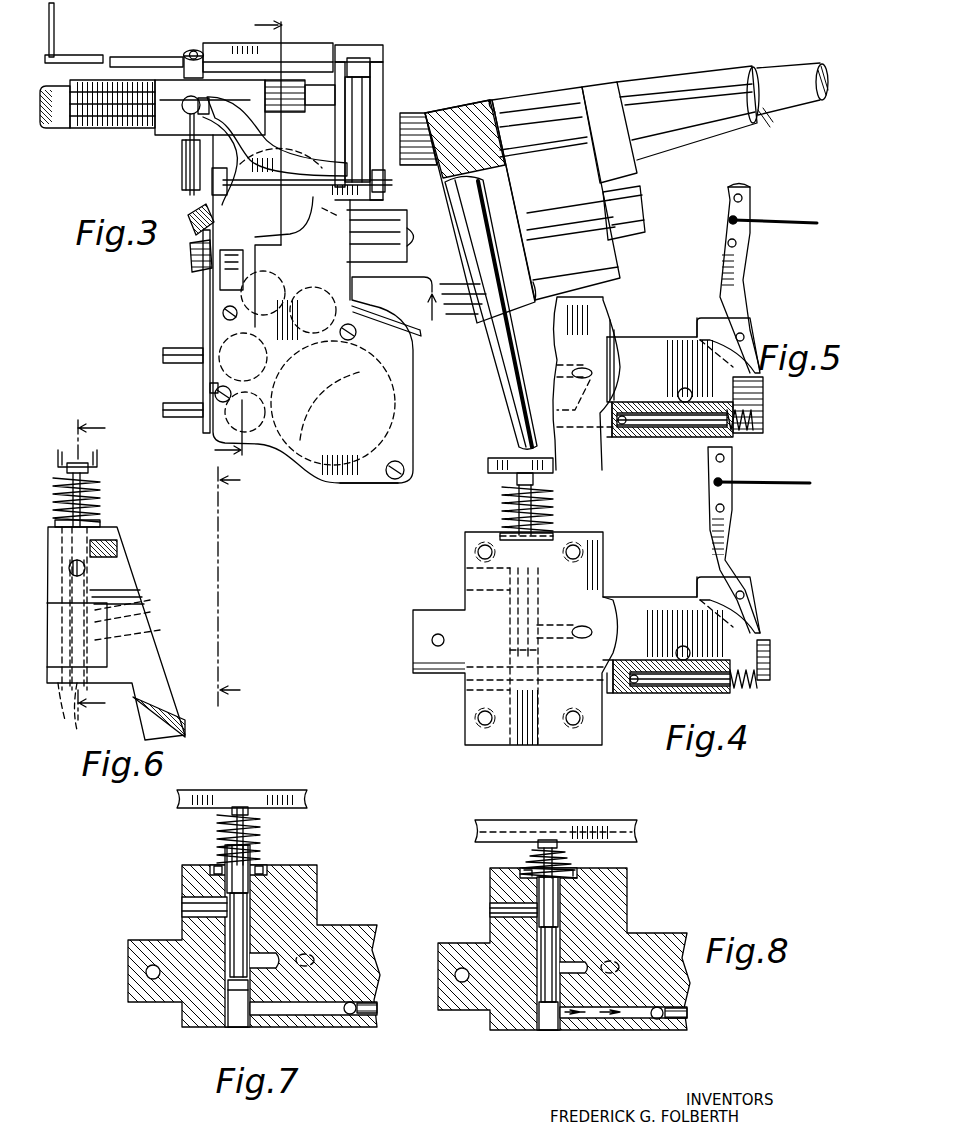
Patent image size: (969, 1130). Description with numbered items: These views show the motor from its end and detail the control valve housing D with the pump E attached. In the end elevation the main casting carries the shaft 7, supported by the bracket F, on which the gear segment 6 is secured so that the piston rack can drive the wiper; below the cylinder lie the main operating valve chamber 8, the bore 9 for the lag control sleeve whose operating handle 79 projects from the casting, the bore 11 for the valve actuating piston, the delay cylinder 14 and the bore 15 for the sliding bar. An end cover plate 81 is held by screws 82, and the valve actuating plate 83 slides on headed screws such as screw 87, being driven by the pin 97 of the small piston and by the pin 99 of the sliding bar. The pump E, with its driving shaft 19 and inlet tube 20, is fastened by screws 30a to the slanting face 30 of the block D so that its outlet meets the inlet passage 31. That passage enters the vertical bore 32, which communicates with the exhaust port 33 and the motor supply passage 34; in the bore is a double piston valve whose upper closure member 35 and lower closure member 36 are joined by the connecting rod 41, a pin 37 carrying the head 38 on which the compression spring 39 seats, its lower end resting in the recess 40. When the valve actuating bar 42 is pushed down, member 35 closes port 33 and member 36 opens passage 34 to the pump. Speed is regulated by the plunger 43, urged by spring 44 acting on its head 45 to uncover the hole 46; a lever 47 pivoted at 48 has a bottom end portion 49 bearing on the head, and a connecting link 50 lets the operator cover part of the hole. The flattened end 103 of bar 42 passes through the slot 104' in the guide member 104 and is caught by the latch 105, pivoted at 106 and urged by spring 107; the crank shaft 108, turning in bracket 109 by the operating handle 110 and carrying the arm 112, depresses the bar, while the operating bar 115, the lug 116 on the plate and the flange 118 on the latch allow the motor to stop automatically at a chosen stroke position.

In FIG. 3, the gear segment 6 is at (292, 88).
In FIG. 3, the shaft 7 is at (60, 115).
In FIG. 6, the shaft 7 is at (99, 569).
In FIG. 3, the main operating valve chamber 8 is at (280, 275).
In FIG. 3, the bore 9 is at (318, 288).
In FIG. 3, the bore 11 is at (292, 365).
In FIG. 3, the delay cylinder 14 is at (300, 480).
In FIG. 3, the bore 15 is at (300, 420).
In FIG. 5, the shaft 19 is at (800, 98).
In FIG. 5, the tube 20 is at (510, 402).
In FIG. 5, the slanting face 30 is at (450, 120).
In FIG. 5, the screws 30a is at (494, 100).
In FIG. 5, the inlet passage 31 is at (587, 368).
In FIG. 4, the inlet passage 31 is at (585, 626).
In FIG. 6, the inlet passage 31 is at (150, 615).
In FIG. 7, the inlet passage 31 is at (270, 958).
In FIG. 8, the inlet passage 31 is at (578, 962).
In FIG. 4, the vertical bore 32 is at (468, 688).
In FIG. 7, the vertical bore 32 is at (248, 1015).
In FIG. 8, the vertical bore 32 is at (540, 970).
In FIG. 4, the exhaust port 33 is at (470, 575).
In FIG. 6, the exhaust port 33 is at (95, 552).
In FIG. 7, the exhaust port 33 is at (183, 902).
In FIG. 8, the exhaust port 33 is at (492, 910).
In FIG. 5, the inlet passage 34 is at (617, 368).
In FIG. 4, the inlet passage 34 is at (562, 682).
In FIG. 6, the inlet passage 34 is at (85, 711).
In FIG. 7, the inlet passage 34 is at (320, 1015).
In FIG. 8, the inlet passage 34 is at (627, 1020).
In FIG. 4, the upper closure member 35 is at (500, 520).
In FIG. 6, the upper closure member 35 is at (102, 522).
In FIG. 7, the upper closure member 35 is at (250, 860).
In FIG. 8, the upper closure member 35 is at (560, 890).
In FIG. 3, the lower closure member 36 is at (248, 236).
In FIG. 4, the lower closure member 36 is at (540, 652).
In FIG. 6, the lower closure member 36 is at (155, 636).
In FIG. 7, the lower closure member 36 is at (225, 990).
In FIG. 8, the lower closure member 36 is at (545, 1032).
In FIG. 4, the pin 37 is at (535, 492).
In FIG. 6, the pin 37 is at (68, 495).
In FIG. 7, the pin 37 is at (236, 832).
In FIG. 8, the pin 37 is at (535, 843).
In FIG. 4, the head 38 is at (517, 482).
In FIG. 6, the head 38 is at (103, 472).
In FIG. 7, the head 38 is at (250, 810).
In FIG. 8, the head 38 is at (545, 842).
In FIG. 4, the compression spring 39 is at (556, 512).
In FIG. 6, the compression spring 39 is at (102, 494).
In FIG. 7, the compression spring 39 is at (216, 847).
In FIG. 8, the compression spring 39 is at (570, 853).
In FIG. 7, the recess 40 is at (270, 870).
In FIG. 8, the recess 40 is at (528, 870).
In FIG. 4, the connecting rod 41 is at (540, 589).
In FIG. 6, the connecting rod 41 is at (110, 580).
In FIG. 7, the connecting rod 41 is at (250, 905).
In FIG. 8, the connecting rod 41 is at (540, 948).
In FIG. 4, the valve actuating bar 42 is at (490, 466).
In FIG. 6, the valve actuating bar 42 is at (98, 456).
In FIG. 7, the valve actuating bar 42 is at (215, 795).
In FIG. 8, the valve actuating bar 42 is at (600, 826).
In FIG. 5, the plunger 43 is at (668, 428).
In FIG. 4, the plunger 43 is at (690, 688).
In FIG. 7, the plunger 43 is at (378, 1010).
In FIG. 8, the plunger 43 is at (688, 1013).
In FIG. 5, the spring 44 is at (727, 430).
In FIG. 4, the spring 44 is at (735, 688).
In FIG. 5, the head 45 is at (753, 422).
In FIG. 4, the head 45 is at (760, 684).
In FIG. 5, the hole 46 is at (620, 438).
In FIG. 4, the hole 46 is at (622, 694).
In FIG. 6, the hole 46 is at (51, 707).
In FIG. 7, the hole 46 is at (355, 1004).
In FIG. 8, the hole 46 is at (662, 1008).
In FIG. 5, the lever 47 is at (742, 282).
In FIG. 4, the lever 47 is at (728, 533).
In FIG. 5, the pivot 48 is at (751, 343).
In FIG. 4, the pivot 48 is at (745, 595).
In FIG. 5, the bottom end portion 49 is at (765, 398).
In FIG. 4, the bottom end portion 49 is at (771, 650).
In FIG. 5, the connecting link 50 is at (780, 226).
In FIG. 4, the connecting link 50 is at (784, 486).
In FIG. 3, the operating handle 79 is at (432, 322).
In FIG. 3, the end cover plate 81 is at (372, 486).
In FIG. 3, the screws 82 is at (356, 312).
In FIG. 3, the valve actuating plate 83 is at (204, 322).
In FIG. 3, the headed screw 87 is at (210, 386).
In FIG. 3, the pin 97 is at (175, 353).
In FIG. 3, the pin 99 is at (172, 410).
In FIG. 3, the flattened end 103 is at (368, 82).
In FIG. 3, the guide member 104 is at (384, 113).
In FIG. 3, the slot 104' is at (369, 45).
In FIG. 3, the latch 105 is at (180, 133).
In FIG. 3, the pivot 106 is at (305, 218).
In FIG. 3, the spring 107 is at (221, 283).
In FIG. 3, the crank shaft 108 is at (126, 58).
In FIG. 3, the bracket 109 is at (234, 47).
In FIG. 3, the operating handle 110 is at (55, 14).
In FIG. 3, the arm 112 is at (186, 53).
In FIG. 3, the operating bar 115 is at (184, 163).
In FIG. 3, the projecting lug 116 is at (188, 210).
In FIG. 3, the projecting flange 118 is at (191, 262).
In FIG. 5, the control valve housing D is at (403, 114).
In FIG. 4, the control valve housing D is at (478, 592).
In FIG. 6, the control valve housing D is at (145, 660).
In FIG. 7, the control valve housing D is at (305, 915).
In FIG. 8, the control valve housing D is at (605, 935).
In FIG. 5, the pump E is at (543, 118).
In FIG. 3, the wiper arm operating shaft supporting bracket F is at (275, 151).